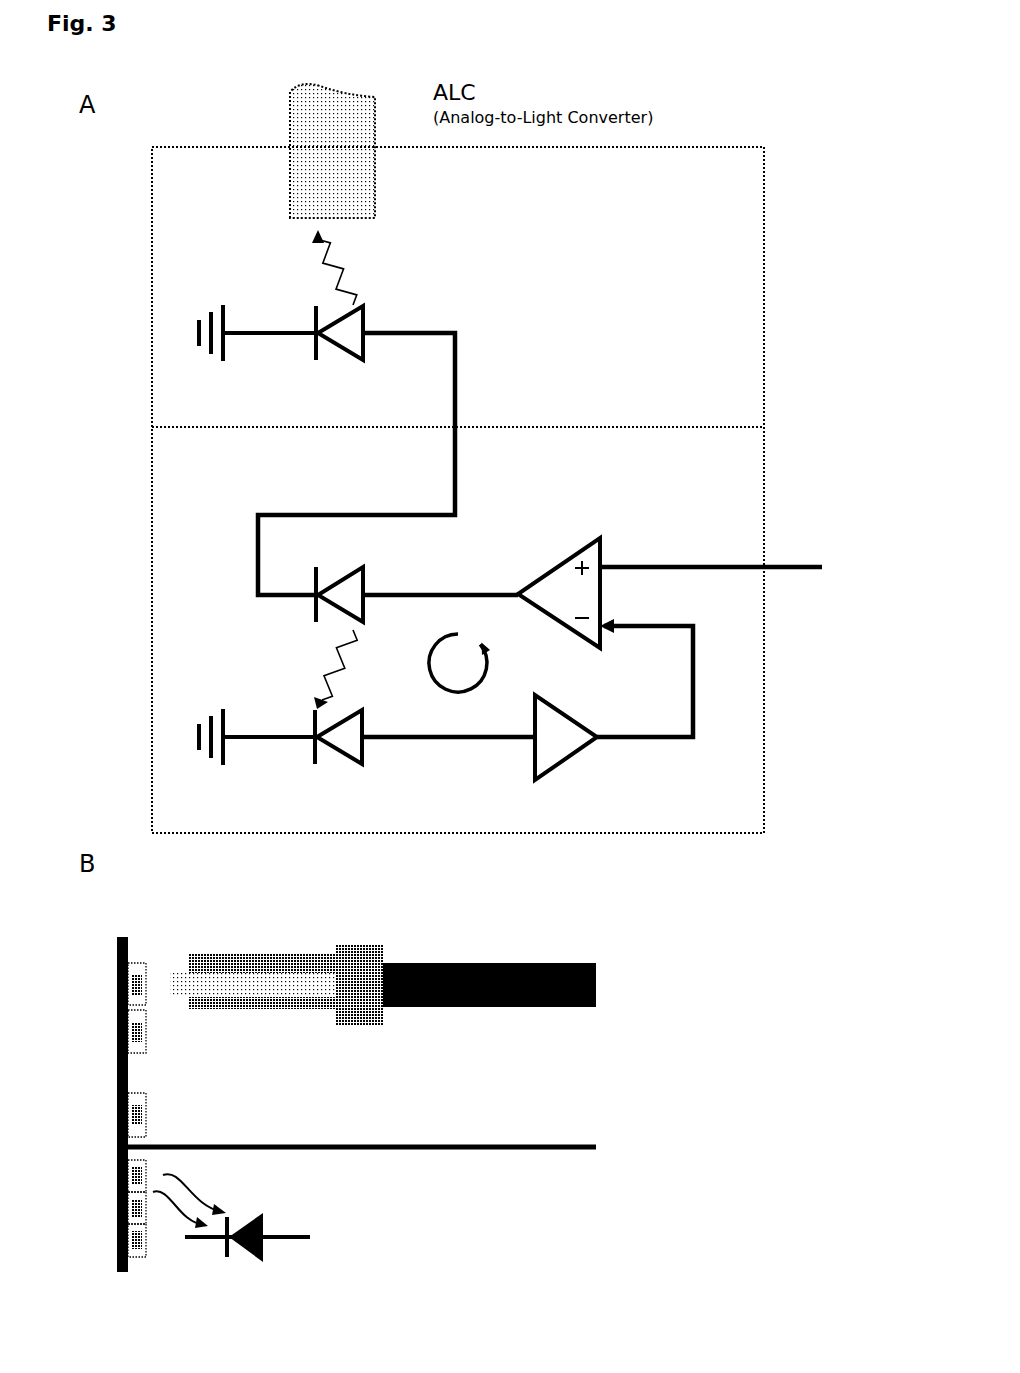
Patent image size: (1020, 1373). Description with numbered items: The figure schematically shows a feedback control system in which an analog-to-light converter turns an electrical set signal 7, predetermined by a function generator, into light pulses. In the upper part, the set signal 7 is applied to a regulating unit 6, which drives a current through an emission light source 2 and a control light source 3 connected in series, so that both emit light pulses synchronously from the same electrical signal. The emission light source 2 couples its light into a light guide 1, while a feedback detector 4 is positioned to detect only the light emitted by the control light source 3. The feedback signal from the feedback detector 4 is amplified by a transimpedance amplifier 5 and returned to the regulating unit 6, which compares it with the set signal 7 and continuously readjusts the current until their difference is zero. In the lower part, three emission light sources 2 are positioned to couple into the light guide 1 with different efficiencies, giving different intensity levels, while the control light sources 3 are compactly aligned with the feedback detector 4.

The light guide 1 is at (383, 555).
The emission light source 2 is at (247, 706).
The control light source 3 is at (247, 904).
The feedback detector 4 is at (288, 985).
The transimpedance amplifier 5 is at (566, 746).
The regulating unit 6 is at (559, 579).
The set signal 7 is at (711, 542).